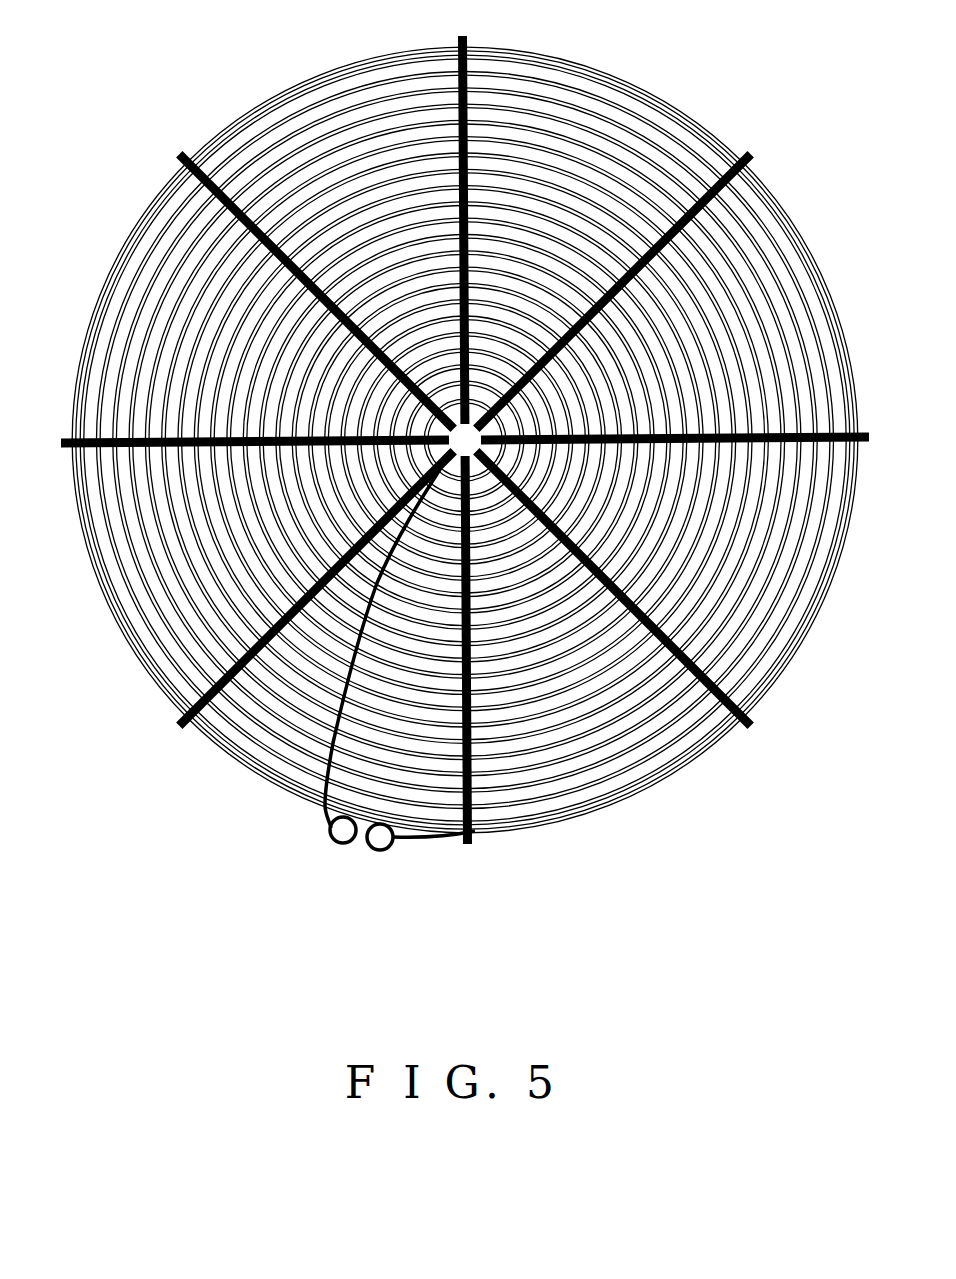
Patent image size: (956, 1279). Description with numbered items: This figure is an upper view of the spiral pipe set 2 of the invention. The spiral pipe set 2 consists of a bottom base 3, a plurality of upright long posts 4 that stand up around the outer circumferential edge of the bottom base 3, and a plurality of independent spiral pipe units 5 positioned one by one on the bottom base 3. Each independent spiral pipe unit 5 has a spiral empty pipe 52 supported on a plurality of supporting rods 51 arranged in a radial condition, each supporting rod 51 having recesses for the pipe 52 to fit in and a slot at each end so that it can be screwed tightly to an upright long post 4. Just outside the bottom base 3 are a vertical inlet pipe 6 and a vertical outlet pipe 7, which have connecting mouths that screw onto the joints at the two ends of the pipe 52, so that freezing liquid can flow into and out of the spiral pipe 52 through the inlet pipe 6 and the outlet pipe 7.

The spiral pipe set 2 is at (465, 557).
The bottom base 3 is at (140, 647).
The upright long post 4 is at (190, 713).
The independent spiral pipe unit 5 is at (465, 538).
The supporting rod 51 is at (223, 707).
The spiral empty pipe 52 is at (570, 793).
The vertical inlet pipe 6 is at (340, 845).
The vertical outlet pipe 7 is at (382, 851).